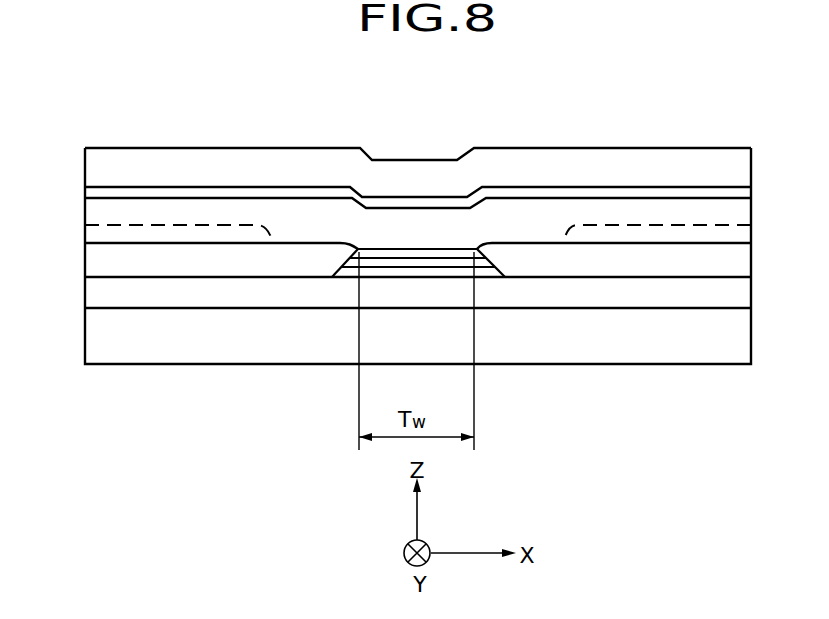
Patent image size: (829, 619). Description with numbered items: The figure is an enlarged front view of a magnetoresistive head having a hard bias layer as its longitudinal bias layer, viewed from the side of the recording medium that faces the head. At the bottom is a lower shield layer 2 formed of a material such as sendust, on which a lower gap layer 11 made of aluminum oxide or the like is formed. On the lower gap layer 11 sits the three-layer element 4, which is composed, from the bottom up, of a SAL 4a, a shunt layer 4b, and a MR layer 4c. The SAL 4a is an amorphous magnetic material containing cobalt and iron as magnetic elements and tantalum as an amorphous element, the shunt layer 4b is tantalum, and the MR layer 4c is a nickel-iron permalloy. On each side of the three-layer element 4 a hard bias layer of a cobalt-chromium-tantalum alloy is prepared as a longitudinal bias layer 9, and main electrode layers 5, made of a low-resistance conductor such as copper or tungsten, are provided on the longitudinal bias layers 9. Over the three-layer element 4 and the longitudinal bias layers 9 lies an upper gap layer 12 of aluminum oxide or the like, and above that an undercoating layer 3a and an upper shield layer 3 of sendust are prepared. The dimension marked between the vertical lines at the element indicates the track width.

The lower shield layer 2 is at (693, 355).
The upper shield layer 3 is at (527, 162).
The undercoating layer 3a is at (395, 202).
The three-layer element 4 is at (398, 278).
The SAL 4a is at (350, 270).
The shunt layer 4b is at (427, 258).
The MR layer 4c is at (462, 250).
The main electrode layer 5 is at (135, 232).
The longitudinal bias layer 9 is at (198, 268).
The lower gap layer 11 is at (135, 295).
The upper gap layer 12 is at (312, 220).